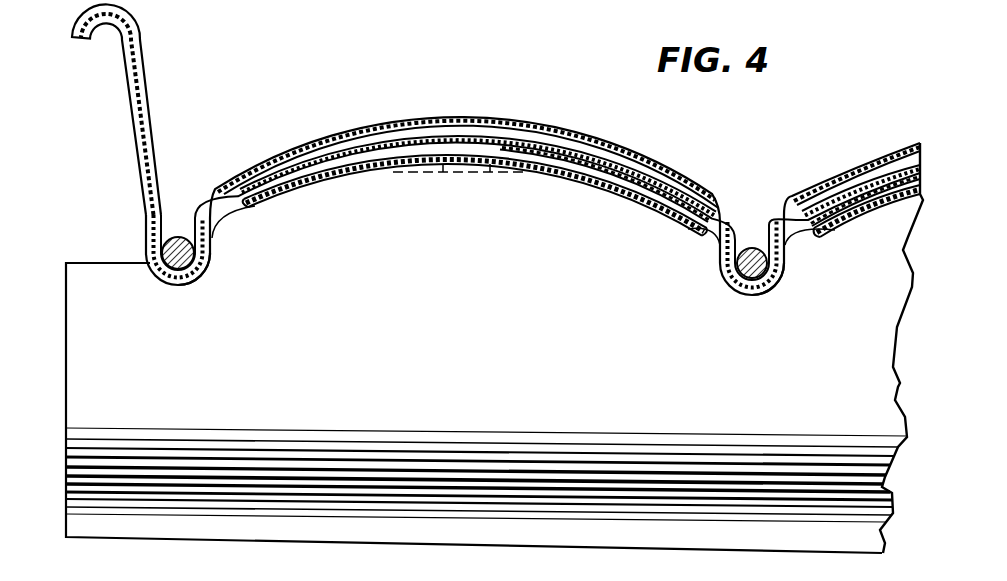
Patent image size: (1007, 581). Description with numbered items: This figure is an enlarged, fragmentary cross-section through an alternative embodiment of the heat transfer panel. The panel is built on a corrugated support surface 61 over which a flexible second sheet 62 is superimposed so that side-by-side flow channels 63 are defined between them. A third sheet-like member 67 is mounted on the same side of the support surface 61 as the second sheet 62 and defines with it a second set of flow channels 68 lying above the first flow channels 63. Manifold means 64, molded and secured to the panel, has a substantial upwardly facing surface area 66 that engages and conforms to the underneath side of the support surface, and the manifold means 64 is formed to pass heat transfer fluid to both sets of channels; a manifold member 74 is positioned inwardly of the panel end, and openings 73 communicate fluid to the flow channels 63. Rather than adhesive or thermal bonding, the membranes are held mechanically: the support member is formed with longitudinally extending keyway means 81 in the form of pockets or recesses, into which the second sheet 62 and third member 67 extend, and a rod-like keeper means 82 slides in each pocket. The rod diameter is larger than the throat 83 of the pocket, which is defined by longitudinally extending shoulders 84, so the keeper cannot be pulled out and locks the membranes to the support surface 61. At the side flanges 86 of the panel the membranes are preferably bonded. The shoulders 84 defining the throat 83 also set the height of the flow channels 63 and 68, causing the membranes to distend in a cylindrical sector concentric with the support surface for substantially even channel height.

The support surface 61 is at (387, 171).
The second sheet 62 is at (148, 88).
The flow channels 63 is at (568, 160).
The manifold means 64 is at (67, 230).
The upwardly facing surface area 66 is at (610, 189).
The third sheet-like member 67 is at (147, 51).
The second set of flow channels 68 is at (298, 160).
The openings 73 is at (467, 173).
The manifold member 74 is at (90, 326).
The keyway means 81 is at (163, 283).
The keeper means 82 is at (197, 281).
The throat 83 is at (178, 212).
The shoulders 84 is at (232, 195).
The side flanges 86 is at (135, 117).